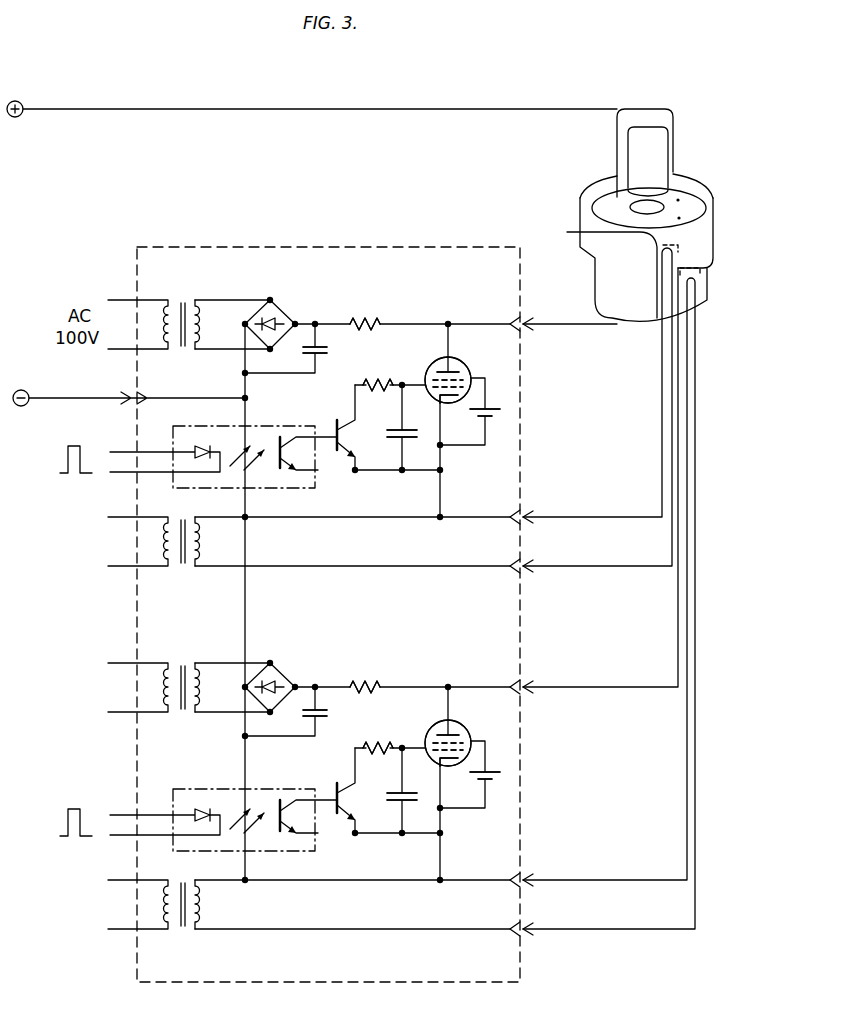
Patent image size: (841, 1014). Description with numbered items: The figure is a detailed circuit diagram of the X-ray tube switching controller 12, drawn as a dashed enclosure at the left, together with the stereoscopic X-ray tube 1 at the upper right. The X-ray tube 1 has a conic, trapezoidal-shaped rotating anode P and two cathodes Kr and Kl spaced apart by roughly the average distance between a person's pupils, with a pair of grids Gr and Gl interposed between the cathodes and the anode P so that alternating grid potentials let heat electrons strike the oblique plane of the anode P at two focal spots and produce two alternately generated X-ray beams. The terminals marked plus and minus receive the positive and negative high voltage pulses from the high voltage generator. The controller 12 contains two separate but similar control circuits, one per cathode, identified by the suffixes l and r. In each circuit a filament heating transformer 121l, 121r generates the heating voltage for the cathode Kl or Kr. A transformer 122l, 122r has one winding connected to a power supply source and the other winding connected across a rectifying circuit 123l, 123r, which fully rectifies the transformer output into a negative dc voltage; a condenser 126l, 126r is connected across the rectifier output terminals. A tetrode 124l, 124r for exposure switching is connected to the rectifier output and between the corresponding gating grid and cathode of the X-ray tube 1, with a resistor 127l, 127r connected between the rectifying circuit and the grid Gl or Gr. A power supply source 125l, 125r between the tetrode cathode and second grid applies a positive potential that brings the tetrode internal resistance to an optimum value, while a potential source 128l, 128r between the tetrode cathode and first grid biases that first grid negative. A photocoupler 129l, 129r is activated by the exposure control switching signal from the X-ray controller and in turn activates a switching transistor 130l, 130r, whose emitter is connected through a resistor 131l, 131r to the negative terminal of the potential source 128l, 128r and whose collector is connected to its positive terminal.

The X-ray tube switching controller 12 is at (404, 247).
The X-ray tube 1 is at (714, 200).
The rotating anode P is at (686, 198).
The left grid Gl is at (600, 272).
The right grid Gr is at (707, 255).
The left cathode Kl is at (665, 253).
The right cathode Kr is at (692, 283).
The filament heating transformer 121l is at (178, 566).
The filament heating transformer 121r is at (172, 925).
The transformer 122l is at (181, 299).
The transformer 122r is at (189, 671).
The rectifying circuit 123l is at (287, 281).
The rectifying circuit 123r is at (281, 672).
The tetrode 124l is at (463, 358).
The tetrode 124r is at (466, 731).
The power supply source 125l is at (499, 420).
The power supply source 125r is at (522, 772).
The condenser 126l is at (329, 357).
The condenser 126r is at (311, 744).
The resistor 127l is at (364, 320).
The resistor 127r is at (380, 667).
The potential source 128l is at (425, 437).
The potential source 128r is at (409, 832).
The photocoupler 129l is at (298, 488).
The photocoupler 129r is at (223, 851).
The switching transistor 130l is at (333, 426).
The switching transistor 130r is at (352, 812).
The resistor 131l is at (385, 378).
The resistor 131r is at (387, 730).